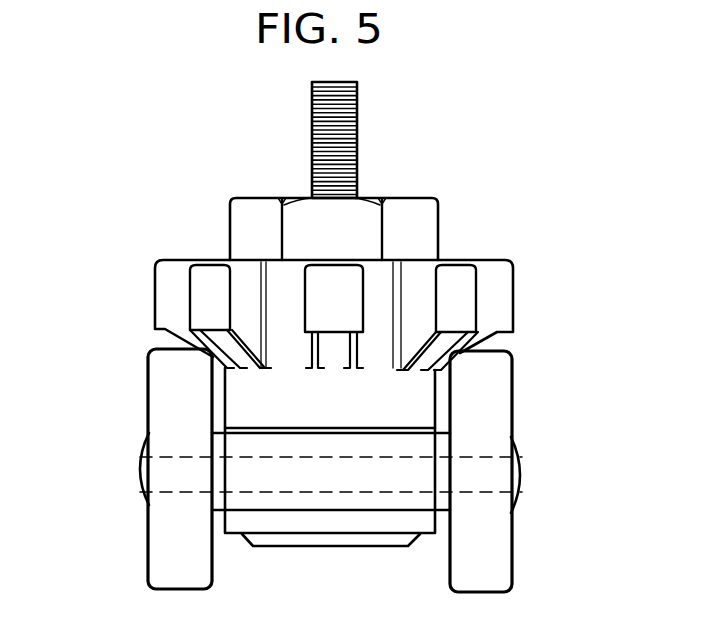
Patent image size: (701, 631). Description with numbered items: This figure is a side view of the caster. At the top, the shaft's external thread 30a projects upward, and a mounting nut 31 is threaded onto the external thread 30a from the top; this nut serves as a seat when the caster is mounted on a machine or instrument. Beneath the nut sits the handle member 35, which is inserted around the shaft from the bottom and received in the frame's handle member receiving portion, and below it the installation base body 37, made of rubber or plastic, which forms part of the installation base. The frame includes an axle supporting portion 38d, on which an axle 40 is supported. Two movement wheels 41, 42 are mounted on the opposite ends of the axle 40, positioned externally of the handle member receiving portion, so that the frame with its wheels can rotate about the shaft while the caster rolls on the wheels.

The external thread 30a is at (357, 128).
The mounting nut 31 is at (428, 228).
The handle member 35 is at (495, 287).
The installation base body 37 is at (398, 538).
The axle supporting portion 38d is at (280, 498).
The axle 40 is at (136, 470).
The movement wheel 41 is at (165, 566).
The movement wheel 42 is at (487, 575).